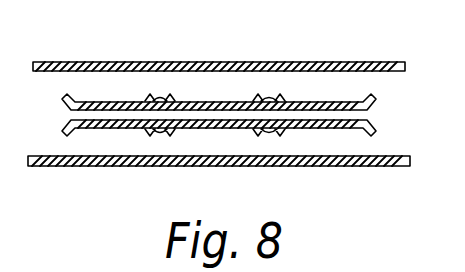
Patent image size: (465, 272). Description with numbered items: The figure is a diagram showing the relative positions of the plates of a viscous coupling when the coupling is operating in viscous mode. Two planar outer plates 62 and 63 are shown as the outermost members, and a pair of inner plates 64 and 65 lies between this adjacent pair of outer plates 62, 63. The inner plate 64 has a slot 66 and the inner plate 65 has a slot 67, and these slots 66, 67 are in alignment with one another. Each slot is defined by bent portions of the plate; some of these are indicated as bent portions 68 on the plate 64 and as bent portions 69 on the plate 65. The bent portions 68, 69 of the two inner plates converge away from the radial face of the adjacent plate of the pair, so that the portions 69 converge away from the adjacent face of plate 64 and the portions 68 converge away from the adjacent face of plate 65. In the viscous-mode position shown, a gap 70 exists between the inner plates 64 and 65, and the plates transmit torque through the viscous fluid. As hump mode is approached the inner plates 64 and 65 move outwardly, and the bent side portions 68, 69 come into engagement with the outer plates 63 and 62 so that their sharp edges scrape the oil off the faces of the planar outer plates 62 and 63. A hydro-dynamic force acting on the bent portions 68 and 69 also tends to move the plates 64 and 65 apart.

The outer plate 62 is at (354, 62).
The outer plate 63 is at (372, 168).
The inner plate 64 is at (97, 129).
The inner plate 65 is at (98, 102).
The slot 66 is at (272, 131).
The slot 67 is at (262, 95).
The bent portions 68 is at (169, 131).
The bent portions 69 is at (169, 95).
The gap 70 is at (72, 116).